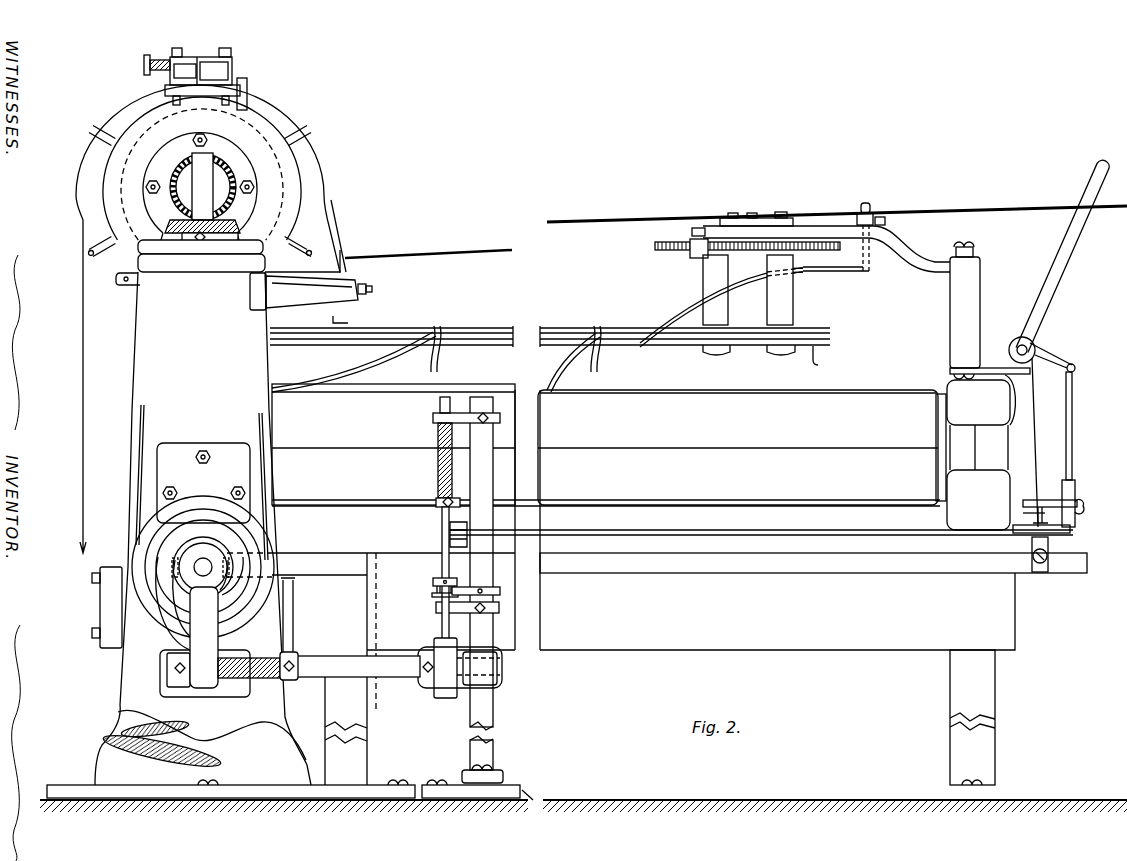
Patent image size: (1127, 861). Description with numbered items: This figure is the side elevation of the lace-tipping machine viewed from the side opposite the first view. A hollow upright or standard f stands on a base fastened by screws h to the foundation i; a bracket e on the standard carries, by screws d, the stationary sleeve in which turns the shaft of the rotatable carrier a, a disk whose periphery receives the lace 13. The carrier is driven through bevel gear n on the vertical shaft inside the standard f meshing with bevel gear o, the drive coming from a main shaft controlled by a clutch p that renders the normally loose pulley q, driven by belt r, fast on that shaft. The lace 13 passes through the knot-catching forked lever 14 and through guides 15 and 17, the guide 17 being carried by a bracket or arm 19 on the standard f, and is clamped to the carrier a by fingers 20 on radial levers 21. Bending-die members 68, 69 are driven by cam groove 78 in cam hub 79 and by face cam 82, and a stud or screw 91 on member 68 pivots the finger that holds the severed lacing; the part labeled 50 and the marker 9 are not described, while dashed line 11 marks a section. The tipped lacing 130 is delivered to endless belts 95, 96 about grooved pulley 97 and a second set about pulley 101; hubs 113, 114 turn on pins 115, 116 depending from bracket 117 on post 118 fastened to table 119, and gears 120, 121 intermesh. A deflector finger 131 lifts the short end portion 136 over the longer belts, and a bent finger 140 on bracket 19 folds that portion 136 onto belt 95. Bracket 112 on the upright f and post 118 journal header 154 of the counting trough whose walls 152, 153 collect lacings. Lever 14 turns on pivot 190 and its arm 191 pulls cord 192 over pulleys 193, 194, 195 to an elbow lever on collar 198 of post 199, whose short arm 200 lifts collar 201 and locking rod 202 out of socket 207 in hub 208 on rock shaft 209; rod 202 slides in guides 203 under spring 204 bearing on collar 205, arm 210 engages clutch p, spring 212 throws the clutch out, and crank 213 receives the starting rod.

The base plate 9 is at (53, 785).
The section line 11 is at (443, 520).
The lace 13 is at (546, 223).
The forked lever 14 is at (1074, 253).
The guide 15 is at (870, 205).
The guide 17 is at (347, 256).
The bracket or arm 19 is at (303, 273).
The finger 20 is at (310, 127).
The lever 21 is at (93, 143).
The top housing 50 is at (212, 70).
The member of bending dies 68 is at (187, 70).
The member of bending dies 69 is at (227, 72).
The cam groove 78 is at (285, 173).
The cam hub 79 is at (243, 107).
The face cam 82 is at (163, 92).
The stud or screw 91 is at (147, 65).
The belt 95 is at (500, 334).
The belt 96 is at (560, 345).
The grooved pulley 97 is at (826, 359).
The grooved pulley 101 is at (677, 350).
The bracket 112 is at (98, 605).
The hub 113 is at (793, 293).
The hub 114 is at (703, 275).
The shaft or pin 115 is at (785, 356).
The shaft or pin 116 is at (725, 356).
The horizontally extended bracket 117 is at (902, 229).
The upright or post 118 is at (949, 317).
The table 119 is at (346, 553).
The gear 120 is at (808, 255).
The gear 121 is at (677, 249).
The tipped lacing 130 is at (82, 388).
The deflector finger or arm 131 is at (693, 306).
The short end portion 136 is at (593, 360).
The bent finger or arm 140 is at (333, 321).
The radially disposed wall 152 is at (796, 510).
The radially disposed wall 153 is at (845, 389).
The header 154 is at (950, 410).
The pivot 190 is at (1020, 343).
The arm 191 is at (1040, 337).
The cord, chain or flexible device 192 is at (508, 529).
The pulley 193 is at (1075, 488).
The pulley 194 is at (1070, 538).
The pulley 195 is at (450, 540).
The collar 198 is at (500, 591).
The upright or post 199 is at (482, 475).
The short arm 200 is at (437, 592).
The collar 201 is at (433, 582).
The rod 202 is at (442, 520).
The guides 203 is at (433, 417).
The spring 204 is at (437, 430).
The collar 205 is at (436, 498).
The socket 207 is at (434, 642).
The hub 208 is at (437, 696).
The rock shaft 209 is at (318, 658).
The arm 210 is at (175, 625).
The spring 212 is at (270, 682).
The crank or arm 213 is at (293, 612).
The disk a is at (287, 99).
The screws d is at (208, 136).
The bracket e is at (157, 153).
The hollow upright or standard f is at (137, 342).
The screws h is at (217, 781).
The foundation i is at (560, 797).
The bevel gear n is at (232, 203).
The bevel gear o is at (217, 155).
The clutch p is at (172, 558).
The pulley q is at (249, 514).
The belt r is at (142, 412).